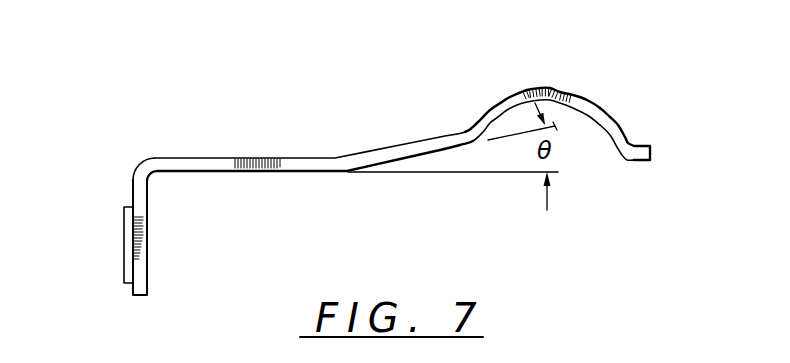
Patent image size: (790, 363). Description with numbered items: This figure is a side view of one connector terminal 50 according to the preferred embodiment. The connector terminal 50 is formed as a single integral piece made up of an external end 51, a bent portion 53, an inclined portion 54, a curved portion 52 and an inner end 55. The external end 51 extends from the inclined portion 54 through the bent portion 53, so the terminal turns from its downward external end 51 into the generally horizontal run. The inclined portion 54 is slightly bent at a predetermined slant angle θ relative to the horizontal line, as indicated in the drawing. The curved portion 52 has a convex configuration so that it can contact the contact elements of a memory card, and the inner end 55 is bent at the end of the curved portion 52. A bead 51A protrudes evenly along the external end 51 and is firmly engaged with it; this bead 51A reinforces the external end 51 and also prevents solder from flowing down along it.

The connector terminal 50 is at (376, 154).
The external end 51 is at (148, 281).
The bead 51A is at (125, 245).
The curved portion 52 is at (557, 87).
The bent portion 53 is at (148, 168).
The inclined portion 54 is at (432, 140).
The inner end 55 is at (646, 147).